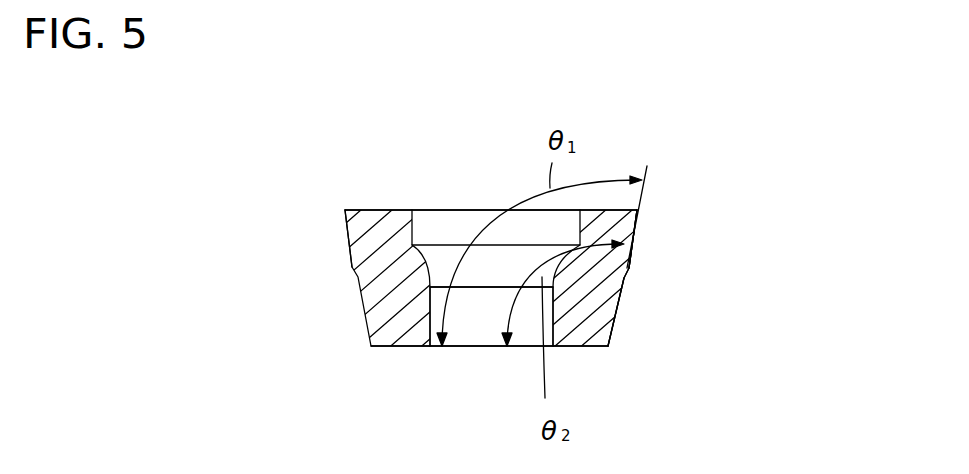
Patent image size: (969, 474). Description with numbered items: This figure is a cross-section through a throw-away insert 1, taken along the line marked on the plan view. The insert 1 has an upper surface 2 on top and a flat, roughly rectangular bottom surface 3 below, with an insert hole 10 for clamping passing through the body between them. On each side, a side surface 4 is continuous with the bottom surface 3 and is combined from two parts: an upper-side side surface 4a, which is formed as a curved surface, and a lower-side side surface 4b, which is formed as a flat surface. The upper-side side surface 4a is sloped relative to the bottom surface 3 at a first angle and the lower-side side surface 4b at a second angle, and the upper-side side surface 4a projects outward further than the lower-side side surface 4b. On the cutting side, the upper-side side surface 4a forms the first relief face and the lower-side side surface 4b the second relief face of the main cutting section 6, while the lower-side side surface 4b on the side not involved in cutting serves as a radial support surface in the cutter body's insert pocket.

The throw-away insert 1 is at (612, 170).
The upper surface 2 is at (388, 210).
The bottom surface 3 is at (398, 350).
The side surface 4 is at (718, 242).
The upper-side side surface 4a is at (631, 249).
The lower-side side surface 4b is at (618, 313).
The main cutting section 6 is at (345, 209).
The insert hole 10 is at (456, 320).